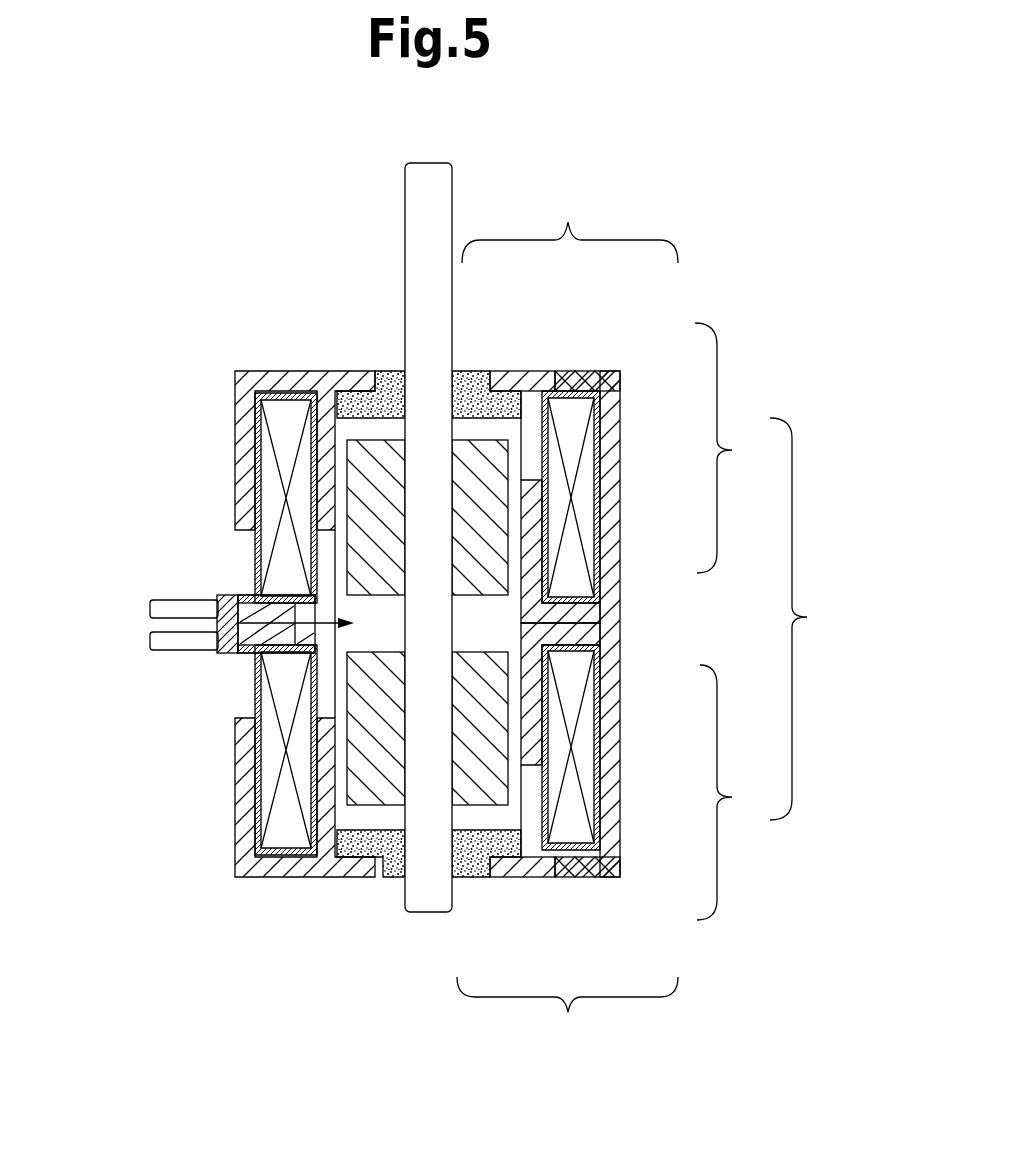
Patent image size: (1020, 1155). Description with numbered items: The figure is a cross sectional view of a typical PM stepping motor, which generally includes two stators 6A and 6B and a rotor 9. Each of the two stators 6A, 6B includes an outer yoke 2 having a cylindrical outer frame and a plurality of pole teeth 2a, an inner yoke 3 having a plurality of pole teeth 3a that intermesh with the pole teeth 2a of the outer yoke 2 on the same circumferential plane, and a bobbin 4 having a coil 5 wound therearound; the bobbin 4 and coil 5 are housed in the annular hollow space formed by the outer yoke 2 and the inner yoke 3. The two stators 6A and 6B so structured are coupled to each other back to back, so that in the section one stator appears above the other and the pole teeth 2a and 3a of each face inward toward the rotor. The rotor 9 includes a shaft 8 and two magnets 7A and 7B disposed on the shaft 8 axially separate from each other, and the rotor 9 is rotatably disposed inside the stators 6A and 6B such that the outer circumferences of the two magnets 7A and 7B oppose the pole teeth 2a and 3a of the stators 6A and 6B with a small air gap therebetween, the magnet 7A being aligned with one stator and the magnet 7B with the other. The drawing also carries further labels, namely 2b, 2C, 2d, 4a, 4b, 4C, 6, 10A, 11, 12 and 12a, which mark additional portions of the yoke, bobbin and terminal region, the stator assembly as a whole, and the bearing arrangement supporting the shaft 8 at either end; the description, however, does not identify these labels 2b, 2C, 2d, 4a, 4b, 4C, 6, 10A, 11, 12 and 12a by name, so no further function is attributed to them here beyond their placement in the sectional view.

The outer yoke 2 is at (612, 463).
The pole teeth 2a is at (316, 447).
The yoke plate portion 2b is at (550, 371).
The outer yoke 2C is at (283, 387).
The bobbin 2d is at (252, 562).
The inner yoke 3 is at (615, 603).
The pole teeth 3a is at (598, 430).
The bobbin 4 is at (573, 371).
The terminal holder 4a is at (222, 596).
The terminal pin 4b is at (172, 606).
The resin cover 4C is at (223, 321).
The coil 5 is at (583, 505).
The stator 6 is at (805, 619).
The stator 6A is at (737, 448).
The stator 6B is at (741, 792).
The magnet 7A is at (378, 456).
The magnet 7B is at (376, 792).
The shaft 8 is at (430, 912).
The rotor 9 is at (401, 601).
The bearing unit 10A is at (567, 620).
The bearing 11 is at (463, 371).
The bearing plate 12 is at (576, 620).
The bearing plate portion 12a is at (525, 371).